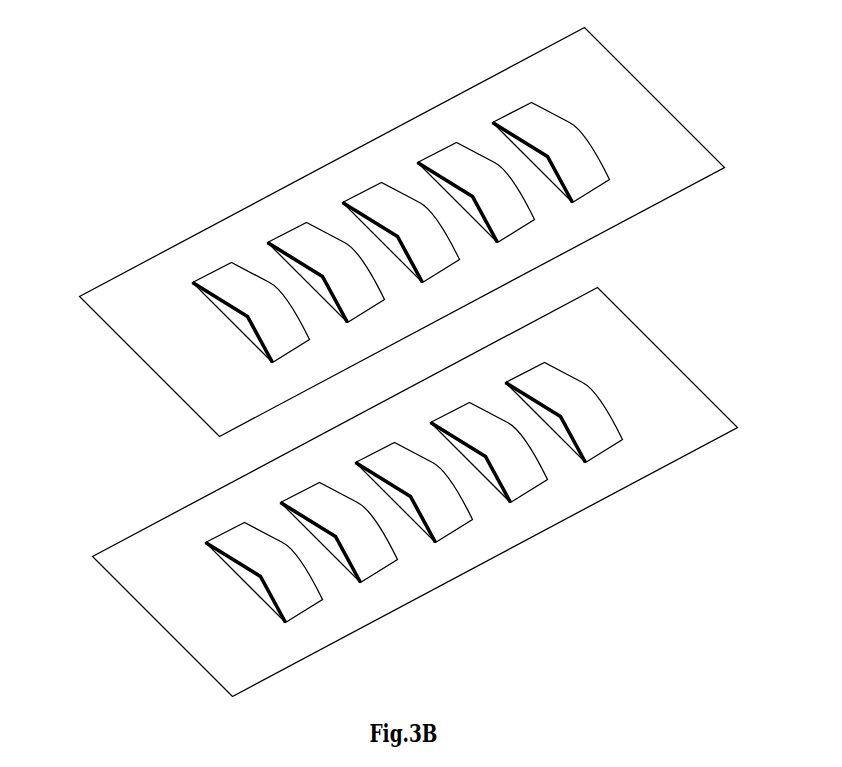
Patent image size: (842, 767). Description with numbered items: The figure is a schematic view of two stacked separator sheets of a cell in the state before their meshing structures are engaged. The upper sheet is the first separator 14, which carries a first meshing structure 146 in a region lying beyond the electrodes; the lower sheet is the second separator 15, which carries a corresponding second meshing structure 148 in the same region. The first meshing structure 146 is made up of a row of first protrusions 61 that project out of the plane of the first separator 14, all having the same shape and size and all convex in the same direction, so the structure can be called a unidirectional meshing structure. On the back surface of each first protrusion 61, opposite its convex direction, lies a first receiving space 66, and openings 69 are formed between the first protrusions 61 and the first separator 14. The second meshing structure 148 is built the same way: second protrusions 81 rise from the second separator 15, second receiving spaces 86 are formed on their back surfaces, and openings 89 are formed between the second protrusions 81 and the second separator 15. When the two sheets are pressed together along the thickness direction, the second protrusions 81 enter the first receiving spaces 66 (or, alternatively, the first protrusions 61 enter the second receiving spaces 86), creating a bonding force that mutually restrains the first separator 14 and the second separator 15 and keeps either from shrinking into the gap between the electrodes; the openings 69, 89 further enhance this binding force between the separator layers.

The first separator 14 is at (135, 290).
The second separator 15 is at (140, 553).
The first protrusions 61 is at (452, 162).
The first receiving spaces 66 is at (467, 205).
The openings 69 is at (543, 158).
The first meshing structure 146 is at (527, 123).
The second protrusions 81 is at (517, 472).
The second receiving spaces 86 is at (478, 465).
The openings 89 is at (553, 432).
The second meshing structure 148 is at (592, 432).